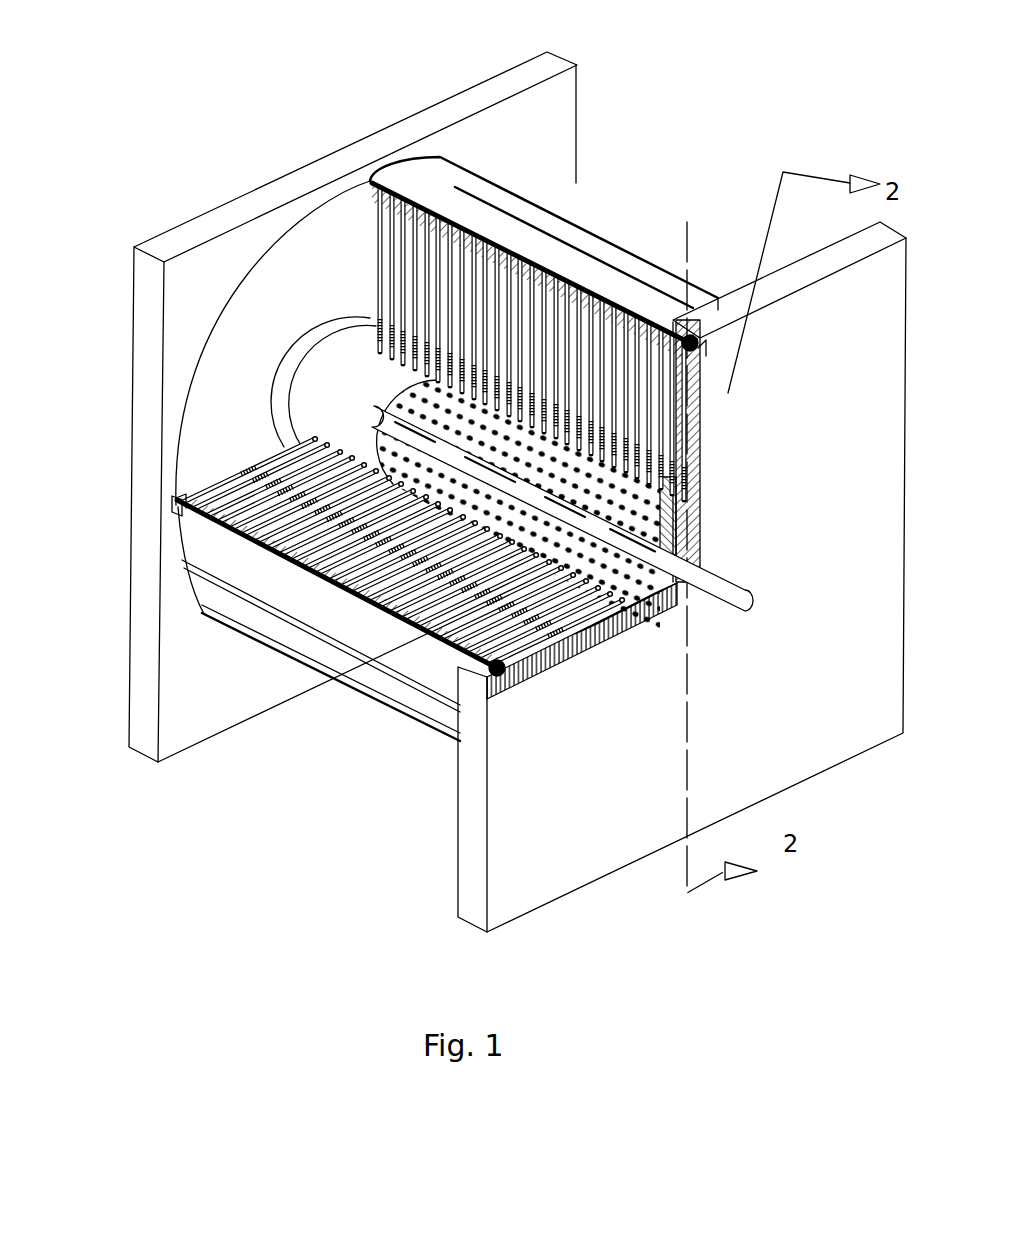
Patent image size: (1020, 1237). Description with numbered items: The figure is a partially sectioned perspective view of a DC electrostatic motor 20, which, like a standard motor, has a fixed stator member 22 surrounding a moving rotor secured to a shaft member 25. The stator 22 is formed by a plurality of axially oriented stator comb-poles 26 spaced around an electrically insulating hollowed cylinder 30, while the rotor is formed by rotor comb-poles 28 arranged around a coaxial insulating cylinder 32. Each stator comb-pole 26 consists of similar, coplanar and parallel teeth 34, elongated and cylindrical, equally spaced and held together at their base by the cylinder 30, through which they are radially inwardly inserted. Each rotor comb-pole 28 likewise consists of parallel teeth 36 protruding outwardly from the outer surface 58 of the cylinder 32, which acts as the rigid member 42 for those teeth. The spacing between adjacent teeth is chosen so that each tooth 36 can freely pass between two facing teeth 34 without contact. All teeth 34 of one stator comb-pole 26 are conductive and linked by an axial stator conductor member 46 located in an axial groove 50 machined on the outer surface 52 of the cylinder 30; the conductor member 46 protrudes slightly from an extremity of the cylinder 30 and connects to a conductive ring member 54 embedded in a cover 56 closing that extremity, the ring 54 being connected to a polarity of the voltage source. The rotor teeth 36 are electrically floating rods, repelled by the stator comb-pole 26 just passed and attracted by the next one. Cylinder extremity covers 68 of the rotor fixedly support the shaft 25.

The electrostatic motor 20 is at (238, 110).
The stator member 22 is at (598, 250).
The shaft member 25 is at (745, 598).
The stator comb-pole 26 is at (190, 497).
The rotor comb-pole 28 is at (372, 413).
The stator cylinder 30 is at (330, 687).
The rotor cylinder 32 is at (652, 598).
The stator tooth 34 is at (393, 237).
The rotor tooth 36 is at (560, 590).
The rigid member 42 is at (192, 495).
The stator conductor member 46 is at (517, 243).
The axial groove 50 is at (330, 637).
The outer surface 52 is at (402, 722).
The conductive ring member 54 is at (540, 733).
The cover 56 is at (213, 303).
The outer surface 58 is at (713, 412).
The cylinder extremity cover 68 is at (353, 375).